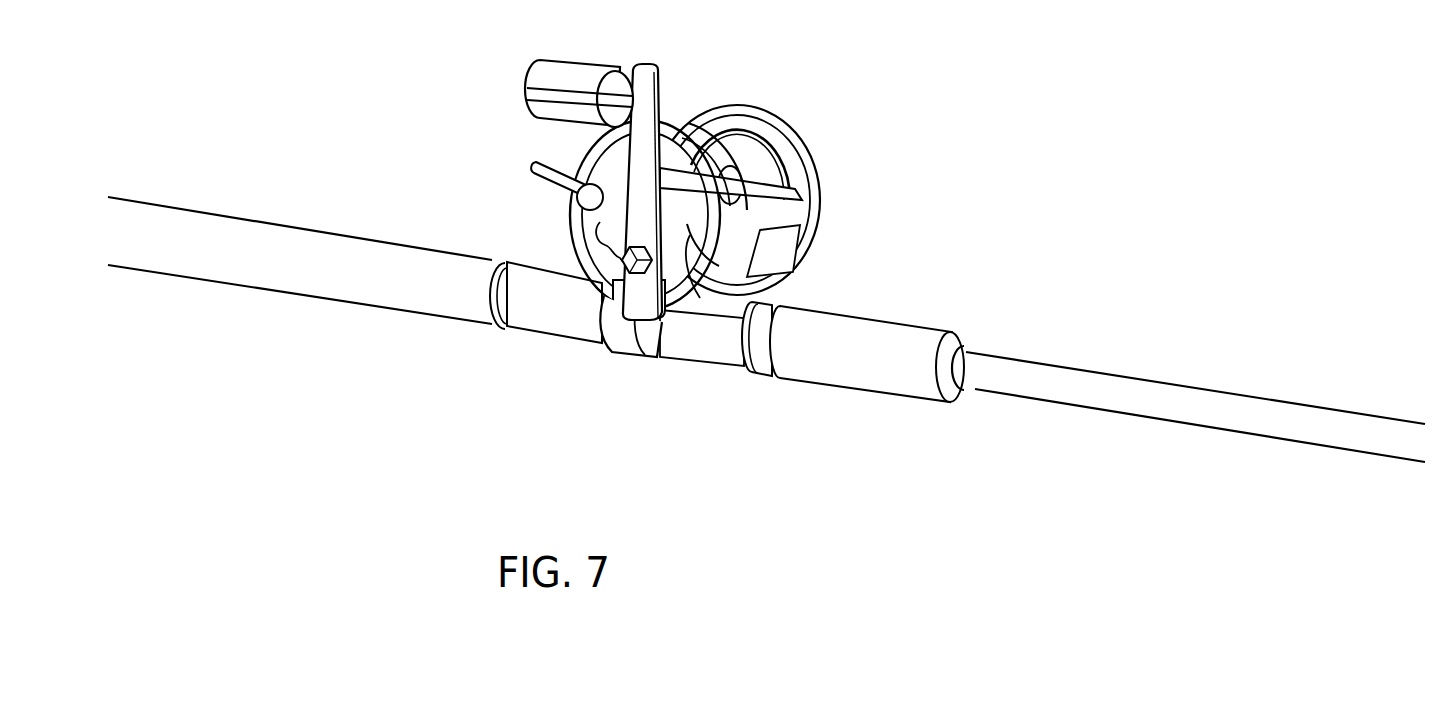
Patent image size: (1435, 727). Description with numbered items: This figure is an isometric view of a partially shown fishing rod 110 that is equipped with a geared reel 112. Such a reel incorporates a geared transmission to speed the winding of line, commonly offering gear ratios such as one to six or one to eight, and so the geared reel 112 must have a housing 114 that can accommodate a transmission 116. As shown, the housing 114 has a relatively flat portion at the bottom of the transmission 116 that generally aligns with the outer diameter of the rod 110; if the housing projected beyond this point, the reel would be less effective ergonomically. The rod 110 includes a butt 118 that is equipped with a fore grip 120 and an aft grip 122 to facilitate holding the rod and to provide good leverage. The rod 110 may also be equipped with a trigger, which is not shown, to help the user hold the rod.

The fishing rod 110 is at (1025, 498).
The geared reel 112 is at (780, 117).
The housing 114 is at (742, 253).
The transmission 116 is at (690, 290).
The butt 118 is at (211, 389).
The fore grip 120 is at (925, 322).
The aft grip 122 is at (300, 222).